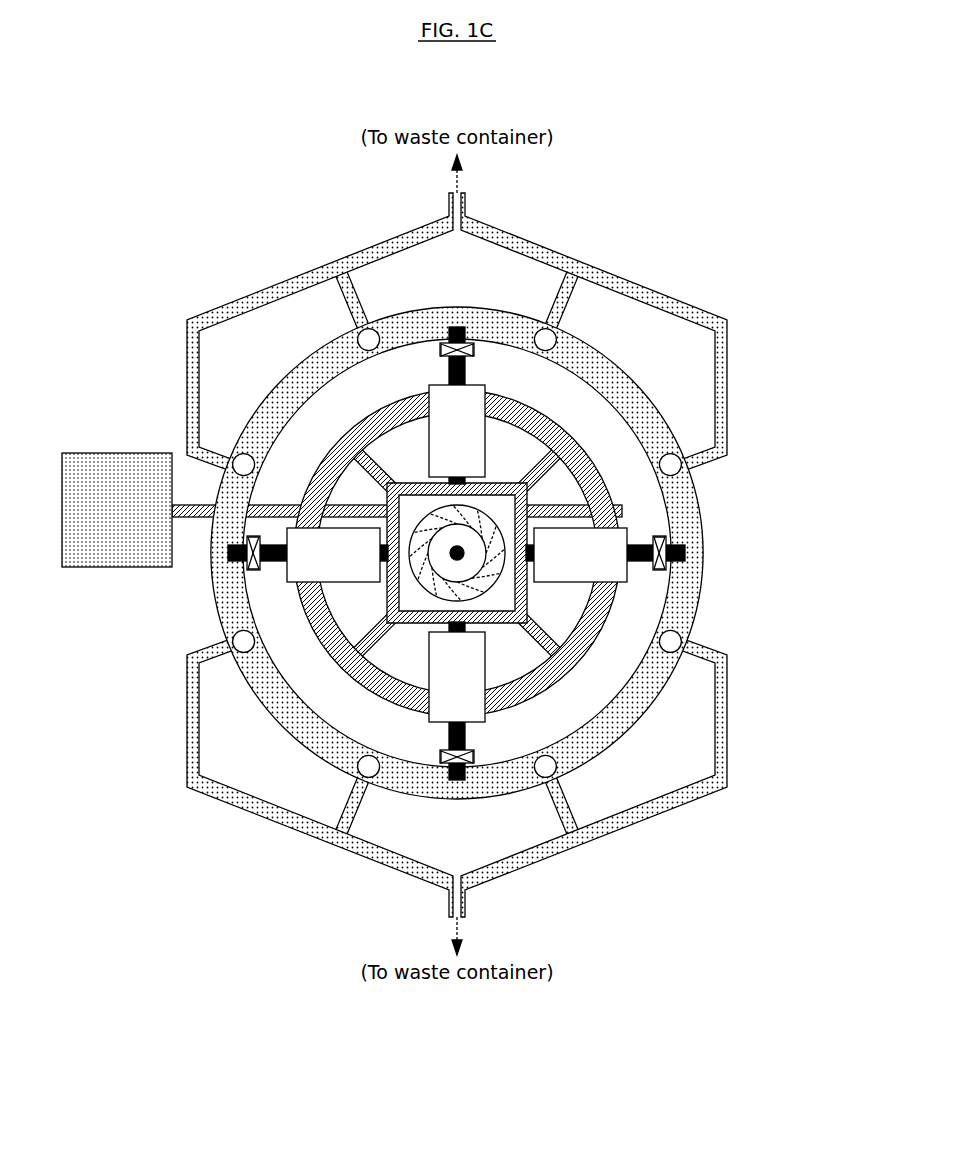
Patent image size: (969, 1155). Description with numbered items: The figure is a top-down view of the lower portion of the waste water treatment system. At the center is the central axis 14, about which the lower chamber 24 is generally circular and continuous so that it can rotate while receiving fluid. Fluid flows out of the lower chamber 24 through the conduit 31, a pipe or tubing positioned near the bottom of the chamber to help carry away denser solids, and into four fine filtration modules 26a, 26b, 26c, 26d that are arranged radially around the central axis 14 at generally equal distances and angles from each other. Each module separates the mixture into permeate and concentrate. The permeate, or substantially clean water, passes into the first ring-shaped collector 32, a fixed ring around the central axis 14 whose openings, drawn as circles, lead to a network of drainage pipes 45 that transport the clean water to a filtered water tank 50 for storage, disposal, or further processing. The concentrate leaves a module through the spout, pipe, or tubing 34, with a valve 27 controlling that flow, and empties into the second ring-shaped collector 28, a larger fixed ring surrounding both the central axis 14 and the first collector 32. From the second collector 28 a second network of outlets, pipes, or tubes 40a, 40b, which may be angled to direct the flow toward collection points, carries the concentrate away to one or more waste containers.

The central axis 14 is at (470, 551).
The lower chamber 24 is at (470, 525).
The fine filtration module 26a is at (343, 570).
The fine filtration module 26b is at (476, 390).
The fine filtration module 26c is at (437, 670).
The fine filtration module 26d is at (618, 540).
The valve 27 is at (247, 573).
The second ring-shaped collector 28 is at (698, 620).
The conduit 31 is at (393, 613).
The first ring-shaped collector 32 is at (620, 602).
The spout, pipe, or tubing 34 is at (270, 566).
The outlet pipe 40a is at (703, 306).
The outlet pipe 40b is at (620, 830).
The drainage pipes 45 is at (315, 452).
The filtered water tank 50 is at (136, 453).